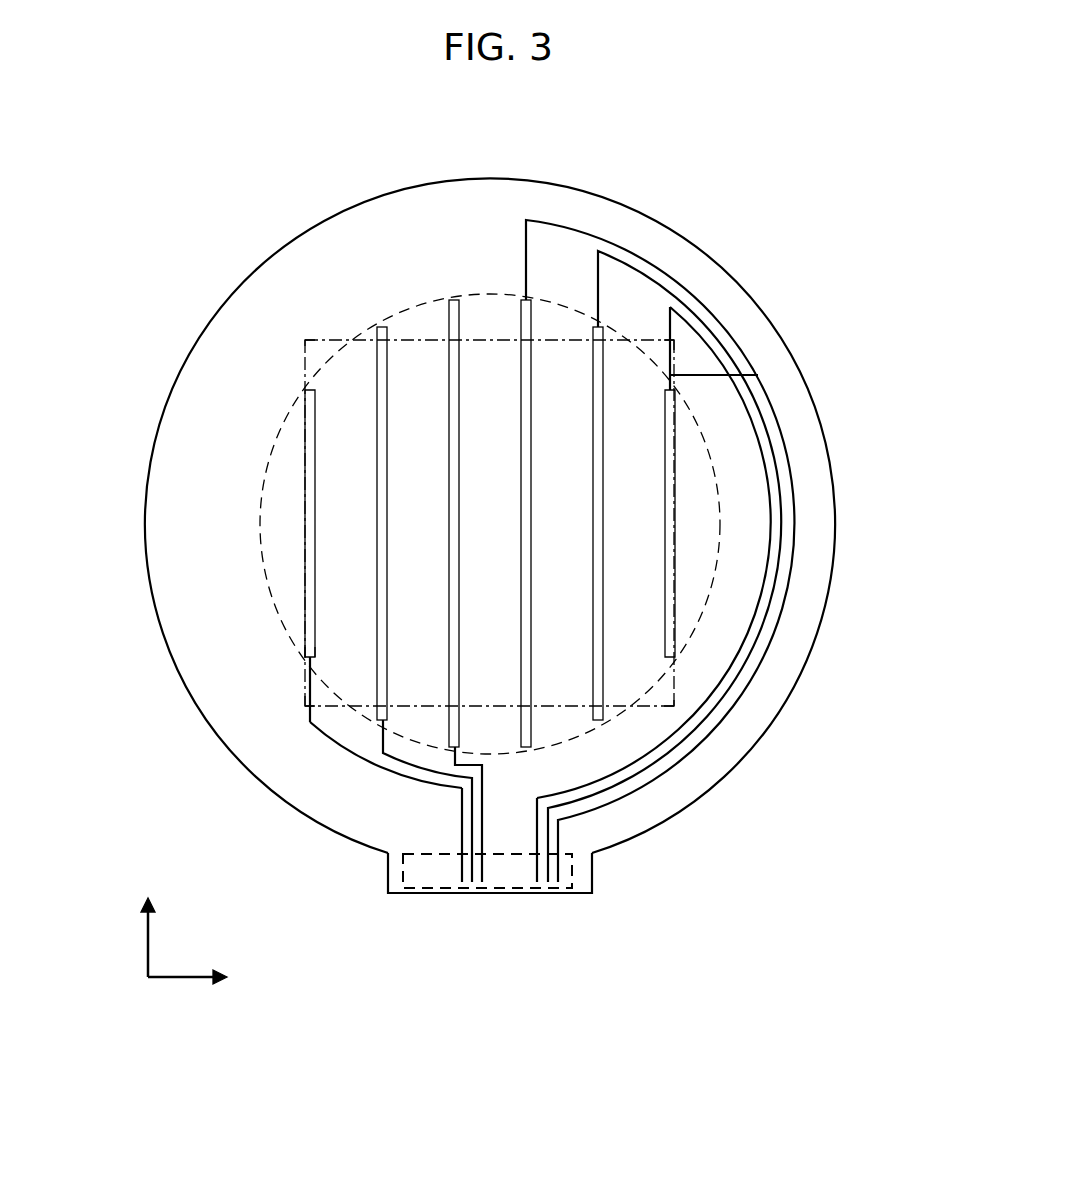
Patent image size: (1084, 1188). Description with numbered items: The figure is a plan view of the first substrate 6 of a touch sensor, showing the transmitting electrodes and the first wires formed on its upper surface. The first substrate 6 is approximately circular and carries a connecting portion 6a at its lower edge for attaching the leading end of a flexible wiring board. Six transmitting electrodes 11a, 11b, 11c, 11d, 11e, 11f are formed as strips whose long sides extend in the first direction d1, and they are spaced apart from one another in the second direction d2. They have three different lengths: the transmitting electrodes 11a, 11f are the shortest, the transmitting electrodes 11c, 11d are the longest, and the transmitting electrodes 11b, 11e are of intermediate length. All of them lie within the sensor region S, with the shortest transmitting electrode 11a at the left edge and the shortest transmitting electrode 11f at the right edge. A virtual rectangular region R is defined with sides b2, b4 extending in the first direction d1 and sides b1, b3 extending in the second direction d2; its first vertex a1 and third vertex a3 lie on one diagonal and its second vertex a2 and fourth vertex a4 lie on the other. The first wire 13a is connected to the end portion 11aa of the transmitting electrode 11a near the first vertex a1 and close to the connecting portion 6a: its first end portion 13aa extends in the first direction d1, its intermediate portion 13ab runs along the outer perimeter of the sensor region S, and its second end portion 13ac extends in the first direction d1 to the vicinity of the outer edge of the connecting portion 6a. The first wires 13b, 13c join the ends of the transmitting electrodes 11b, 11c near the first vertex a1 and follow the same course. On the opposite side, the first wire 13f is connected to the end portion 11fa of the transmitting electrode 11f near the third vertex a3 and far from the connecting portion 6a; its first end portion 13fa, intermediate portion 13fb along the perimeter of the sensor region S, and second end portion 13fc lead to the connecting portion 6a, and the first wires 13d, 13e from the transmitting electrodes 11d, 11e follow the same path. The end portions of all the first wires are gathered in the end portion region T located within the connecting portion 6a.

The first substrate 6 is at (497, 551).
The connecting portion 6a is at (593, 885).
The sensor region S is at (470, 293).
The rectangular region R is at (495, 544).
The first vertex a1 is at (305, 706).
The second vertex a2 is at (674, 706).
The third vertex a3 is at (674, 340).
The fourth vertex a4 is at (305, 340).
The side b1 is at (493, 708).
The side b2 is at (676, 358).
The side b3 is at (412, 340).
The side b4 is at (304, 368).
The transmitting electrode 11a is at (209, 523).
The end portion 11aa is at (306, 656).
The transmitting electrode 11b is at (389, 555).
The transmitting electrode 11c is at (491, 540).
The transmitting electrode 11d is at (563, 540).
The transmitting electrode 11e is at (635, 540).
The transmitting electrode 11f is at (791, 523).
The end portion 11fa is at (677, 394).
The first wire 13a is at (252, 829).
The first end portion 13aa is at (309, 680).
The intermediate portion 13ab is at (340, 745).
The second end portion 13ac is at (461, 855).
The first wire 13b is at (397, 763).
The first wire 13c is at (481, 857).
The first wire 13d is at (525, 268).
The first wire 13e is at (597, 292).
The first wire 13f is at (748, 584).
The first end portion 13fa is at (760, 378).
The intermediate portion 13fb is at (754, 620).
The second end portion 13fc is at (566, 832).
The end portion region T is at (573, 856).
The first direction d1 is at (148, 947).
The second direction d2 is at (178, 978).